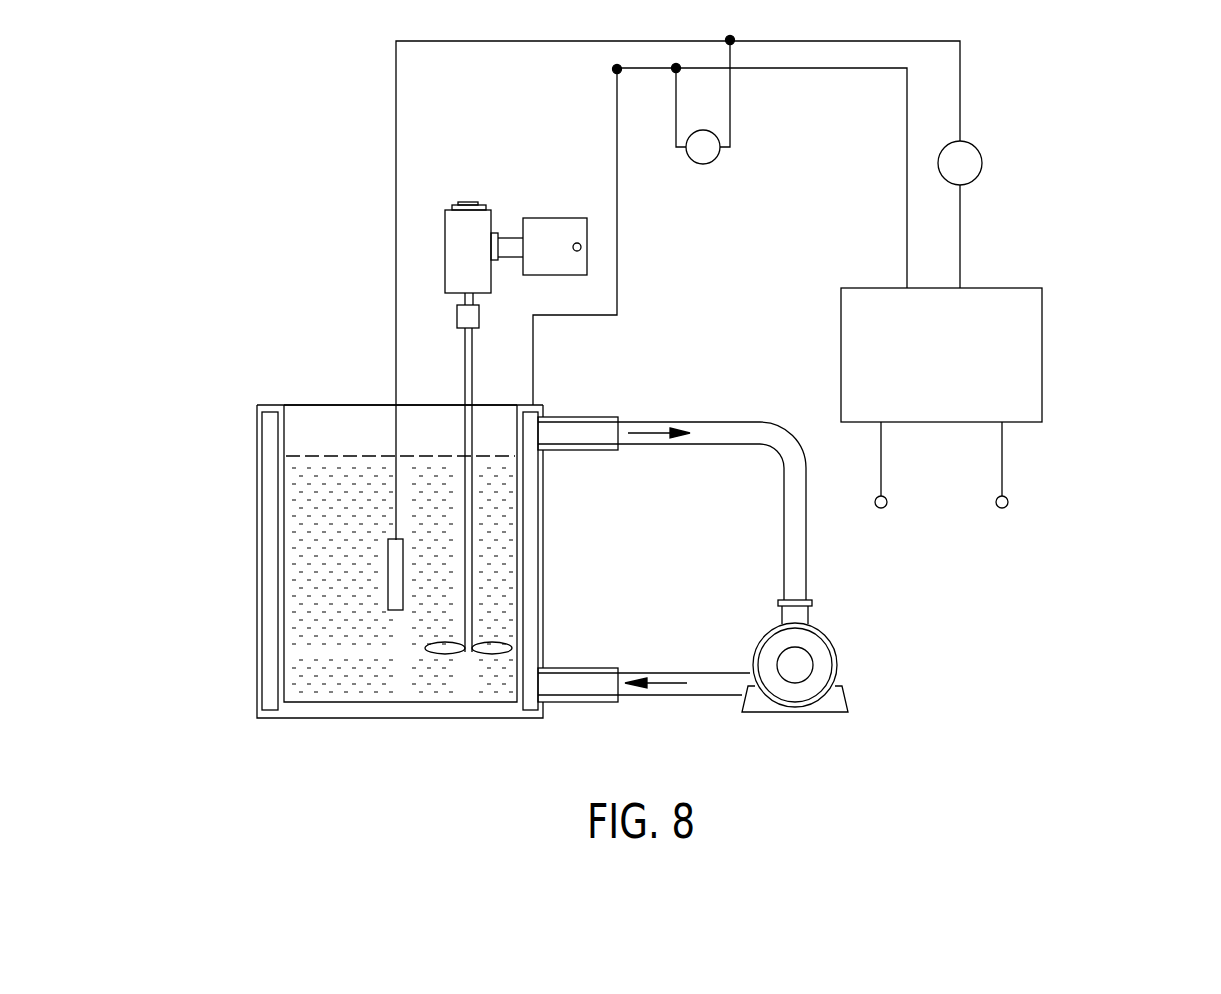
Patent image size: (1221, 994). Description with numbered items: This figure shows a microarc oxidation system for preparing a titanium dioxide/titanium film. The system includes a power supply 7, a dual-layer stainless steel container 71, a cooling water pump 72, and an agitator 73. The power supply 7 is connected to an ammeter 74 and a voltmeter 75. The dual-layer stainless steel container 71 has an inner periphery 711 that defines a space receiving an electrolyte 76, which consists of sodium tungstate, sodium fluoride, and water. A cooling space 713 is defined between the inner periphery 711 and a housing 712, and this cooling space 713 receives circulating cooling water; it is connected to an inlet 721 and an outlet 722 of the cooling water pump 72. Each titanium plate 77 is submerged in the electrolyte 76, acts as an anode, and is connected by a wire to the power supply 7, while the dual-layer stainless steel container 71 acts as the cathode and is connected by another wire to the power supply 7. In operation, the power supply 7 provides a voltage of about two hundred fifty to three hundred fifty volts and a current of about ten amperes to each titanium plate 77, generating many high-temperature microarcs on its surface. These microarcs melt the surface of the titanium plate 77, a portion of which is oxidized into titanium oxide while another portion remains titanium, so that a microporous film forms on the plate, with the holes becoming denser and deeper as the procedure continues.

The power supply 7 is at (1067, 350).
The dual-layer stainless steel container 71 is at (240, 488).
The inner periphery 711 is at (284, 413).
The housing 712 is at (258, 438).
The cooling space 713 is at (272, 603).
The cooling water pump 72 is at (857, 657).
The inlet 721 is at (798, 563).
The outlet 722 is at (717, 690).
The agitator 73 is at (435, 248).
The ammeter 74 is at (727, 167).
The voltmeter 75 is at (990, 163).
The electrolyte 76 is at (287, 635).
The titanium plate 77 is at (382, 562).